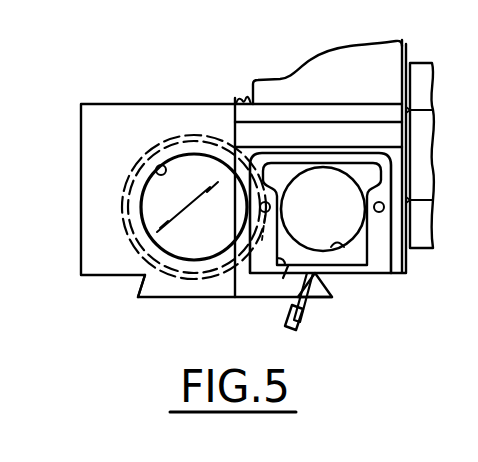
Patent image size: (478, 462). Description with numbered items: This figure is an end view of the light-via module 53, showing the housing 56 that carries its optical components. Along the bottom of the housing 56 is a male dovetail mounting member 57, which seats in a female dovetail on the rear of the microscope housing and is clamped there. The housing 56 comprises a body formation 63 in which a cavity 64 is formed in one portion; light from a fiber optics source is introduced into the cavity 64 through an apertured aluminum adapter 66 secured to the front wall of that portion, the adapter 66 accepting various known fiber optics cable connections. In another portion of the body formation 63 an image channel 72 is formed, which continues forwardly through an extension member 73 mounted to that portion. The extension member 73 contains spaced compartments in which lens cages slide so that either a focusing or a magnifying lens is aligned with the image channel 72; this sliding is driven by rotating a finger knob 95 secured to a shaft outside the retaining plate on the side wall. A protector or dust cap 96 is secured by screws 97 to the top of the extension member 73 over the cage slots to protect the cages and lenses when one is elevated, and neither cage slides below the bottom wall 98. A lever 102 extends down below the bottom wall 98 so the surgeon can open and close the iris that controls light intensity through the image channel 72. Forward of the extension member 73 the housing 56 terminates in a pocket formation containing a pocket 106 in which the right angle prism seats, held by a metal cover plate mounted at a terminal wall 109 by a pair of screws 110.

The module 53 is at (139, 348).
The housing 56 is at (59, 257).
The male dovetail mounting member 57 is at (138, 288).
The body formation 63 is at (174, 104).
The cavity 64 is at (154, 169).
The aluminum adapter 66 is at (88, 125).
The image channel 72 is at (336, 244).
The extension member 73 is at (334, 100).
The finger knob 95 is at (431, 65).
The protector or dust cap 96 is at (316, 63).
The screws 97 is at (236, 101).
The bottom wall 98 is at (397, 278).
The lever 102 is at (305, 318).
The pocket 106 is at (284, 276).
The terminal wall 109 is at (403, 263).
The screws 110 is at (368, 204).